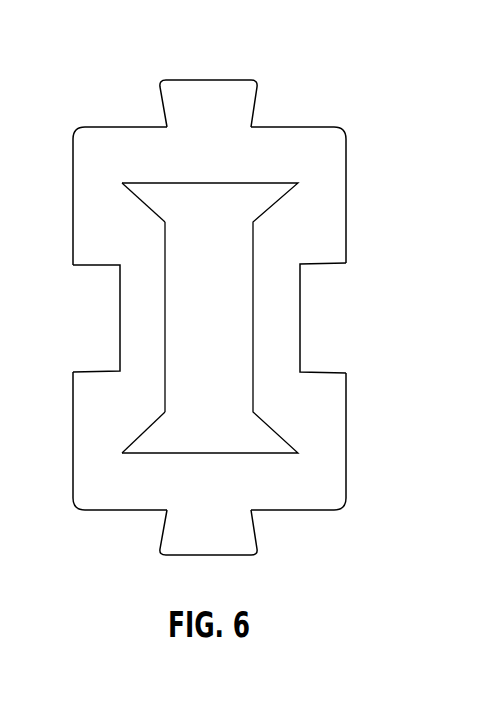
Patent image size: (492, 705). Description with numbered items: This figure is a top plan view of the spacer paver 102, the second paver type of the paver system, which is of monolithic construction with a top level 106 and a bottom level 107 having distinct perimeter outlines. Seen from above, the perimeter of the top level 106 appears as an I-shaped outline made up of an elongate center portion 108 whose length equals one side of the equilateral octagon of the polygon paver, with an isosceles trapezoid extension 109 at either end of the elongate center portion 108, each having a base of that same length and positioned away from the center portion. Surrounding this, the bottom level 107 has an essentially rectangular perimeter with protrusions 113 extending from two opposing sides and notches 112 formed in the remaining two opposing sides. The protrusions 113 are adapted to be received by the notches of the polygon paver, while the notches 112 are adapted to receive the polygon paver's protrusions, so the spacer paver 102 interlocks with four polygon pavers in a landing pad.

The spacer paver 102 is at (371, 99).
The top level 106 is at (245, 276).
The bottom level 107 is at (113, 142).
The elongate center portion 108 is at (153, 327).
The isosceles trapezoid extension 109 is at (130, 208).
The notches 112 is at (104, 326).
The protrusions 113 is at (215, 71).